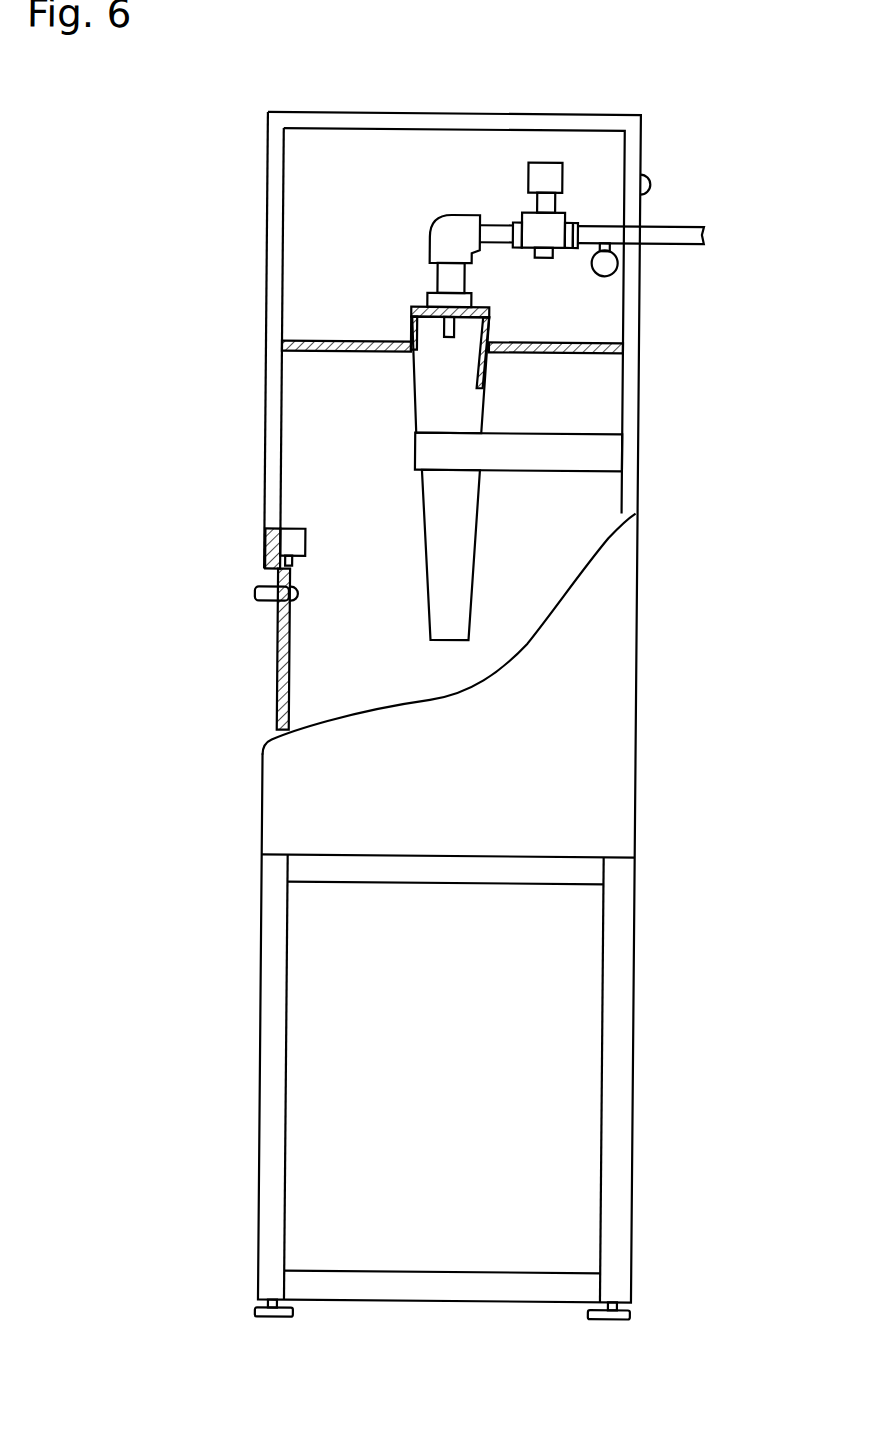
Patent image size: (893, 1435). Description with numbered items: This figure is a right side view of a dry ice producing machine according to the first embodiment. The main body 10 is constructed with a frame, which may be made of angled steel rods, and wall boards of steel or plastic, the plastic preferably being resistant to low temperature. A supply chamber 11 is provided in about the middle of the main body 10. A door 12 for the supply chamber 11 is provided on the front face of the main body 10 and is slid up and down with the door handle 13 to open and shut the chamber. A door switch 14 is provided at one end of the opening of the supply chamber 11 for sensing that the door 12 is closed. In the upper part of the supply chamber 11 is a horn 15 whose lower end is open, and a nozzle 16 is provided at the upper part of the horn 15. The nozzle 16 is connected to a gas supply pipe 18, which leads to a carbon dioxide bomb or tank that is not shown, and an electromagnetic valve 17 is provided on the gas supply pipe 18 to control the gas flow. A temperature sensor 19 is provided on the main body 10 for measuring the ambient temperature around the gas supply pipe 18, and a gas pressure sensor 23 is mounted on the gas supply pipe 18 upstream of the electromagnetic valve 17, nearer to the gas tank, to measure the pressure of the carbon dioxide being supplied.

The main body 10 is at (258, 165).
The supply chamber 11 is at (524, 561).
The door 12 is at (277, 668).
The door handle 13 is at (255, 596).
The door switch 14 is at (288, 530).
The horn 15 is at (462, 408).
The nozzle 16 is at (475, 383).
The electromagnetic valve 17 is at (540, 179).
The gas supply pipe 18 is at (662, 227).
The temperature sensor 19 is at (646, 184).
The gas pressure sensor 23 is at (612, 262).